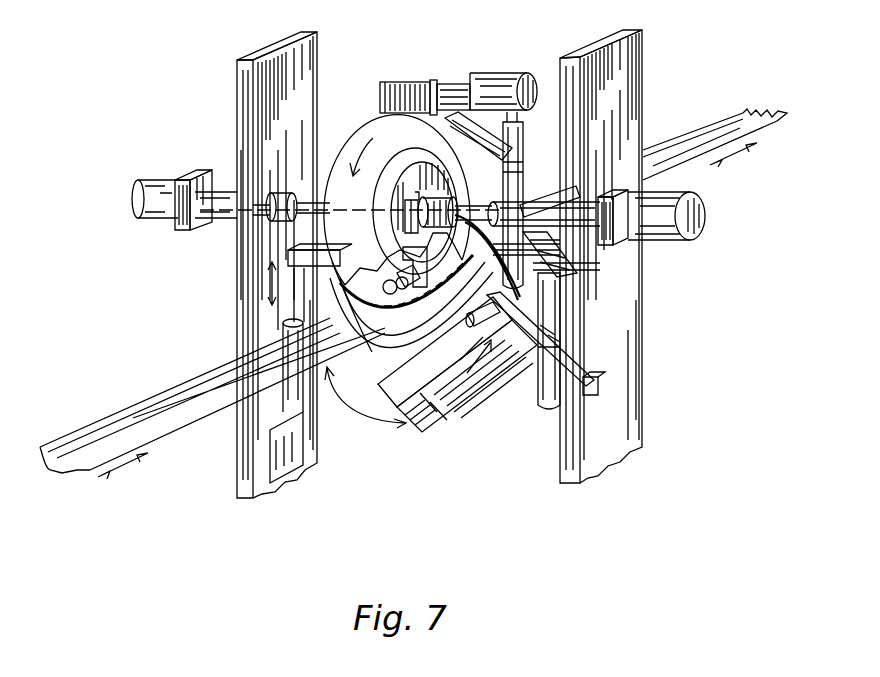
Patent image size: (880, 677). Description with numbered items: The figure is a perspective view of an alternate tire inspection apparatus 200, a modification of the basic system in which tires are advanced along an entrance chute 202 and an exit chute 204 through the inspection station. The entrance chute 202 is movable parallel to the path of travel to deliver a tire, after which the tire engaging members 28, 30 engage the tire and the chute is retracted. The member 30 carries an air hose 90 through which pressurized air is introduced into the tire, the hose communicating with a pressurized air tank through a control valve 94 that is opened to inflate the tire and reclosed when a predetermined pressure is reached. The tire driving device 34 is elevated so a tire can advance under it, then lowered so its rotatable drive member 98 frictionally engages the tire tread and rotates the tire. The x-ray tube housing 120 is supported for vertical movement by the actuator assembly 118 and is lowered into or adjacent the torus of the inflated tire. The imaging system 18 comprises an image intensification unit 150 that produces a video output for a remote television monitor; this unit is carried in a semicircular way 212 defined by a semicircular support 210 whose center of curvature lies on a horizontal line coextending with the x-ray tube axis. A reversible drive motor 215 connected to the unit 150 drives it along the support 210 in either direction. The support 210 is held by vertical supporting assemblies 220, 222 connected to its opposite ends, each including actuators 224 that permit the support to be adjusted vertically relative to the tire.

The tire inspection apparatus 200 is at (158, 74).
The tire engaging member 28 is at (228, 188).
The rotatable drive member 98 is at (405, 82).
The tire driving device 34 is at (494, 74).
The actuator assembly 118 is at (407, 200).
The entrance chute 202 is at (712, 130).
The tire engaging member 30 is at (578, 212).
The vertical supporting assembly 220 is at (283, 326).
The exit chute 204 is at (172, 432).
The x-ray tube housing 120 is at (417, 291).
The semicircular support 210 is at (365, 397).
The semicircular way 212 is at (406, 360).
The reversible drive motor 215 is at (497, 337).
The image intensification unit 150 is at (470, 393).
The imaging system 18 is at (446, 441).
The actuator 224 is at (300, 415).
The vertical supporting assembly 222 is at (557, 298).
The air hose 90 is at (560, 333).
The control valve 94 is at (600, 397).